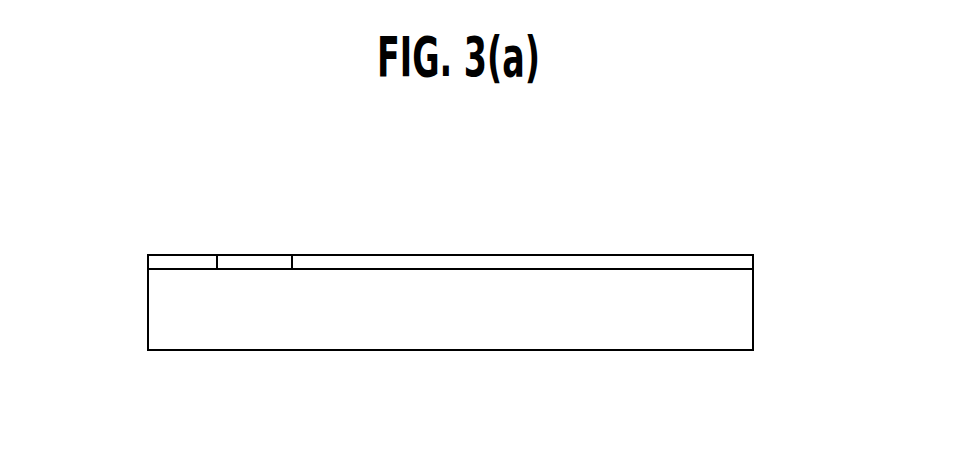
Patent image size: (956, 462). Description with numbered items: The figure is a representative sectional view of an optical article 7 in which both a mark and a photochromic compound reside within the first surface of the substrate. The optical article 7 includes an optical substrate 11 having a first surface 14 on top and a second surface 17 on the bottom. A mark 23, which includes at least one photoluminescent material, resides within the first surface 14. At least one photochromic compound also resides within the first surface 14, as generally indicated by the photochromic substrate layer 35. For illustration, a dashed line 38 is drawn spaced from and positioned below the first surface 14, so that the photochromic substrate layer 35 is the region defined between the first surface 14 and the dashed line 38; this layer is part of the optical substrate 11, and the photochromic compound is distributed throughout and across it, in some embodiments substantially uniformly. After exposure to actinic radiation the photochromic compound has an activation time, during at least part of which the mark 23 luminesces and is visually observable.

The optical substrate 11 is at (742, 311).
The first surface 14 is at (595, 256).
The dashed line 38 is at (647, 270).
The photochromic substrate layer 35 is at (425, 261).
The mark 23 is at (238, 262).
The second surface 17 is at (591, 350).
The optical article 7 is at (46, 390).